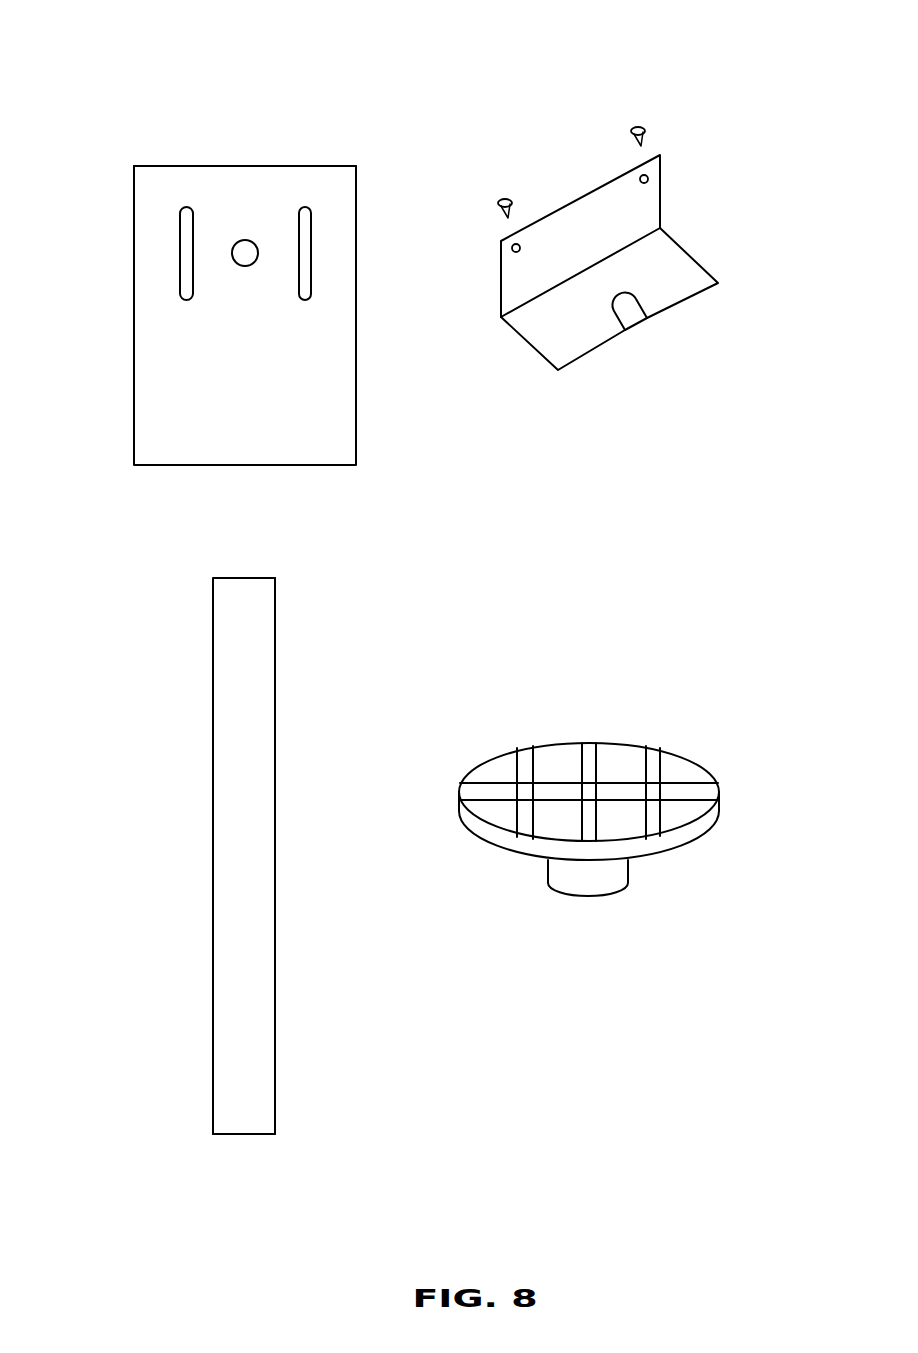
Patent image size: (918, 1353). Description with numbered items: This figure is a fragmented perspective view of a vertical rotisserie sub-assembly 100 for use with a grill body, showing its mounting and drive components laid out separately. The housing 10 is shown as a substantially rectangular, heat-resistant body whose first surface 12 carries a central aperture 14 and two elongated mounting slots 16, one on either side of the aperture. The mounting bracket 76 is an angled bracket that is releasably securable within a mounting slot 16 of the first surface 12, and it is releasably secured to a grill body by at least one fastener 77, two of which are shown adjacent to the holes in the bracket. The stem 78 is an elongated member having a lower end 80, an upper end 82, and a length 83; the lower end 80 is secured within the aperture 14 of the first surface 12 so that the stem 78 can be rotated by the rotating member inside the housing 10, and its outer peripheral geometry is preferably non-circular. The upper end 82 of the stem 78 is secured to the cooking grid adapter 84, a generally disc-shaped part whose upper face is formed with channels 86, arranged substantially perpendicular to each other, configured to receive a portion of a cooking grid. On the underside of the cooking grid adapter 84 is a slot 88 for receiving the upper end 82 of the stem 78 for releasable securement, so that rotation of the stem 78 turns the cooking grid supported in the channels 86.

The vertical rotisserie sub-assembly 100 is at (143, 94).
The housing 10 is at (236, 166).
The first surface 12 is at (293, 177).
The aperture 14 is at (252, 252).
The mounting slot 16 is at (183, 282).
The mounting bracket 76 is at (683, 252).
The fastener 77 is at (513, 203).
The stem 78 is at (275, 815).
The lower end 80 is at (275, 1097).
The upper end 82 is at (275, 602).
The length 83 is at (275, 775).
The cooking grid adapter 84 is at (705, 828).
The channel 86 is at (705, 791).
The slot 88 is at (592, 895).